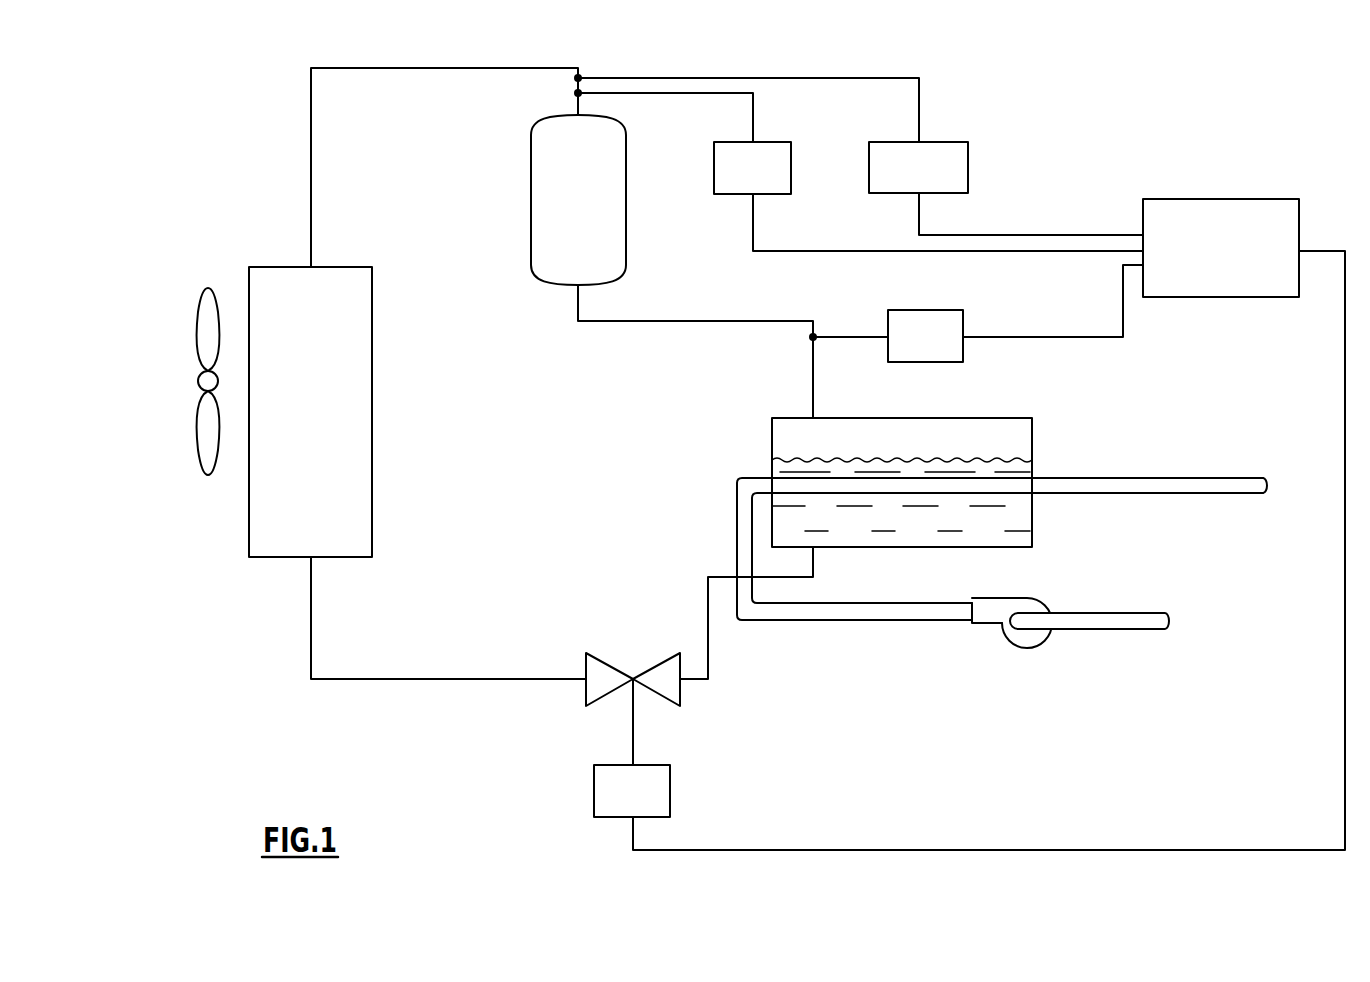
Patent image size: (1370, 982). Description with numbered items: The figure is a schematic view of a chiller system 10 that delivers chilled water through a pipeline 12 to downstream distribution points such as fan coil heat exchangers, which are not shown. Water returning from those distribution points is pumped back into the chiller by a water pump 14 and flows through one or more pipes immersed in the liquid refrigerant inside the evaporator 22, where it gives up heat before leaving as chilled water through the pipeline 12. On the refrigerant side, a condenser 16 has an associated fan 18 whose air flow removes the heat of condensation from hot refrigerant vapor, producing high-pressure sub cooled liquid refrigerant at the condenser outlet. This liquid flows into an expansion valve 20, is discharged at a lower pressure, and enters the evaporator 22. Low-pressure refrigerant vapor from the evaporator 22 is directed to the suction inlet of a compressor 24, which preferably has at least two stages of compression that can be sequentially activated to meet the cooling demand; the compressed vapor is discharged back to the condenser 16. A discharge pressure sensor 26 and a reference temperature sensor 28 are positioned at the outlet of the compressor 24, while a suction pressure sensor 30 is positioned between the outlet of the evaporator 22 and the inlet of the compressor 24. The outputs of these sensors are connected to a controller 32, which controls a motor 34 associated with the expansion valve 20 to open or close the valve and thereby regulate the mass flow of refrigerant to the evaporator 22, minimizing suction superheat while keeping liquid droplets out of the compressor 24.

The chiller system 10 is at (306, 768).
The pipeline 12 is at (1057, 478).
The water pump 14 is at (1037, 605).
The condenser 16 is at (372, 398).
The fan 18 is at (199, 358).
The expansion valve 20 is at (609, 665).
The evaporator 22 is at (970, 418).
The compressor 24 is at (616, 215).
The discharge pressure sensor 26 is at (791, 159).
The reference temperature sensor 28 is at (968, 159).
The suction pressure sensor 30 is at (963, 320).
The controller 32 is at (1243, 199).
The motor 34 is at (670, 783).